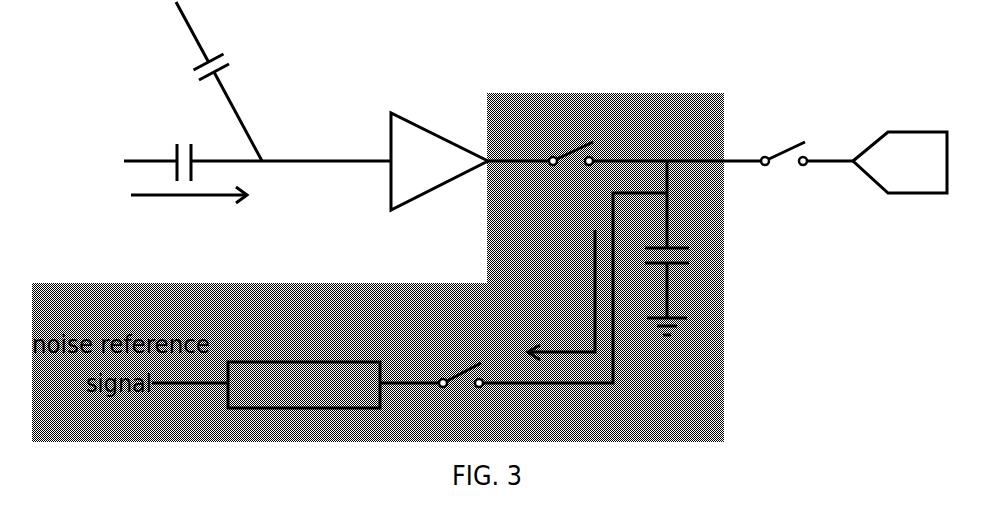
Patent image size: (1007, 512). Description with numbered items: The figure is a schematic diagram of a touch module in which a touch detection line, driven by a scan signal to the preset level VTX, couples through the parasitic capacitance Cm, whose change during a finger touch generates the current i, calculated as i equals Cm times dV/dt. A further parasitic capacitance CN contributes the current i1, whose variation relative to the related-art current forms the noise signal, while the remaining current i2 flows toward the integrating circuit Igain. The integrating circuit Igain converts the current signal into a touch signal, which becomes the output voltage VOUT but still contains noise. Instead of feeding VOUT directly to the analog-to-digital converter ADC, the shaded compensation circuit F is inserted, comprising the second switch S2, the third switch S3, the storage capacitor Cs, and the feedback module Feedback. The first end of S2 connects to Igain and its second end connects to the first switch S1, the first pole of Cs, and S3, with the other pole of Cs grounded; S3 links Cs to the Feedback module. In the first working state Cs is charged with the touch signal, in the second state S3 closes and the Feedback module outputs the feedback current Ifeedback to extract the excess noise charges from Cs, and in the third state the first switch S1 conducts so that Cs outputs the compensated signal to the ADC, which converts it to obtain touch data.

The compensation circuit F is at (378, 267).
The preset level VTX is at (123, 162).
The parasitic capacitance Cm is at (183, 145).
The parasitic capacitance CN is at (223, 81).
The current i1 is at (256, 109).
The signal current i2 is at (372, 175).
The current i is at (194, 215).
The integrating circuit Igain is at (439, 161).
The second switch S2 is at (571, 141).
The output voltage VOUT is at (662, 192).
The first switch S1 is at (784, 141).
The analog-to-digital converter ADC is at (900, 162).
The storage capacitor Cs is at (673, 291).
The feedback current Ifeedback is at (553, 295).
The third switch S3 is at (461, 394).
The feedback module Feedback is at (295, 385).